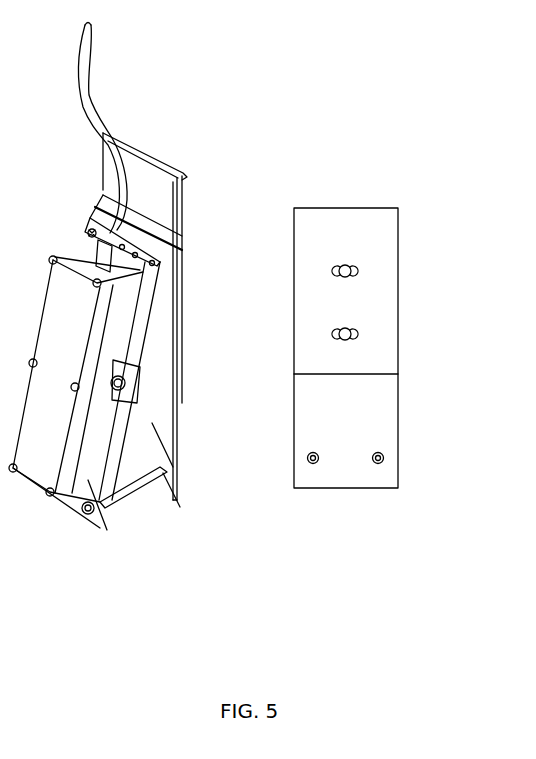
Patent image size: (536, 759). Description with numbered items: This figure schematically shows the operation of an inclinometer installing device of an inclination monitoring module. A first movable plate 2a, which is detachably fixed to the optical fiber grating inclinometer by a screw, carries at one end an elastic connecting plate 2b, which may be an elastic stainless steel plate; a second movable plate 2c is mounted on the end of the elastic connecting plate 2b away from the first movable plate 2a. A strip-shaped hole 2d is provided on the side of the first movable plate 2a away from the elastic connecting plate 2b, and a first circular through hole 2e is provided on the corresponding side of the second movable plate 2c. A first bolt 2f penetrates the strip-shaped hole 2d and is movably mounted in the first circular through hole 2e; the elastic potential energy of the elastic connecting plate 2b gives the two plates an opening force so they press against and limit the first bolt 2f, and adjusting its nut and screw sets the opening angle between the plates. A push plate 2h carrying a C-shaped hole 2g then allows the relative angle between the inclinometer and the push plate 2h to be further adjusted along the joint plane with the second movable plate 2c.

The first movable plate 2a is at (127, 480).
The elastic connecting plate 2b is at (173, 242).
The second movable plate 2c is at (152, 423).
The strip-shaped hole 2d is at (103, 530).
The first circular through hole 2e is at (173, 500).
The first bolt 2f is at (133, 478).
The C-shaped hole 2g is at (348, 338).
The push plate 2h is at (153, 203).